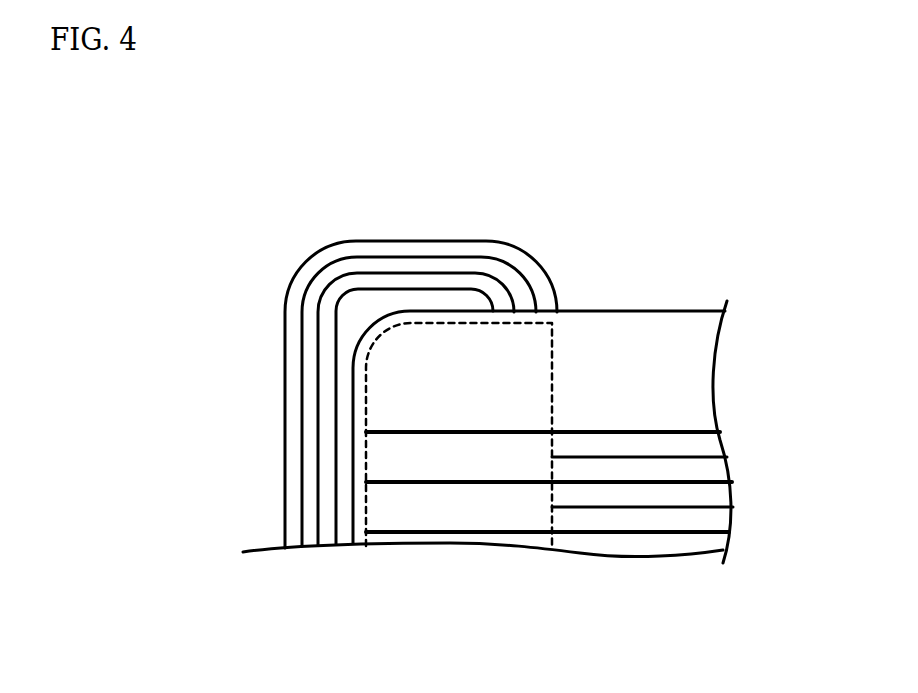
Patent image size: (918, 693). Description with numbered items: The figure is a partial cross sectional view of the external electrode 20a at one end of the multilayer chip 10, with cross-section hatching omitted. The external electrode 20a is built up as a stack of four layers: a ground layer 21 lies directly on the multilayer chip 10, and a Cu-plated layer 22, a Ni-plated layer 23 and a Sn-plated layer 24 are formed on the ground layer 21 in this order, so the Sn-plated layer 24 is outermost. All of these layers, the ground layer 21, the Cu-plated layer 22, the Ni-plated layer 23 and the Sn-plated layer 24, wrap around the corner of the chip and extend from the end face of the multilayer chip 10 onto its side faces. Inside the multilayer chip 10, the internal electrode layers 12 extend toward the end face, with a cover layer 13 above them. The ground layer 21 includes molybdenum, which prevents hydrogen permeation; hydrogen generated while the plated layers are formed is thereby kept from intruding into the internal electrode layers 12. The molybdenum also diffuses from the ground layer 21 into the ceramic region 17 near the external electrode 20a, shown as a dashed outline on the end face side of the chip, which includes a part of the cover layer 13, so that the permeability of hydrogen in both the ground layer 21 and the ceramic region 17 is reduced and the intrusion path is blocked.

The multilayer chip 10 is at (707, 302).
The internal electrode layer 12 is at (497, 533).
The cover layer 13 is at (650, 350).
The ceramic region 17 is at (437, 323).
The external electrode 20a is at (304, 368).
The ground layer 21 is at (317, 416).
The Cu-plated layer 22 is at (330, 392).
The Ni-plated layer 23 is at (312, 337).
The Sn-plated layer 24 is at (298, 293).